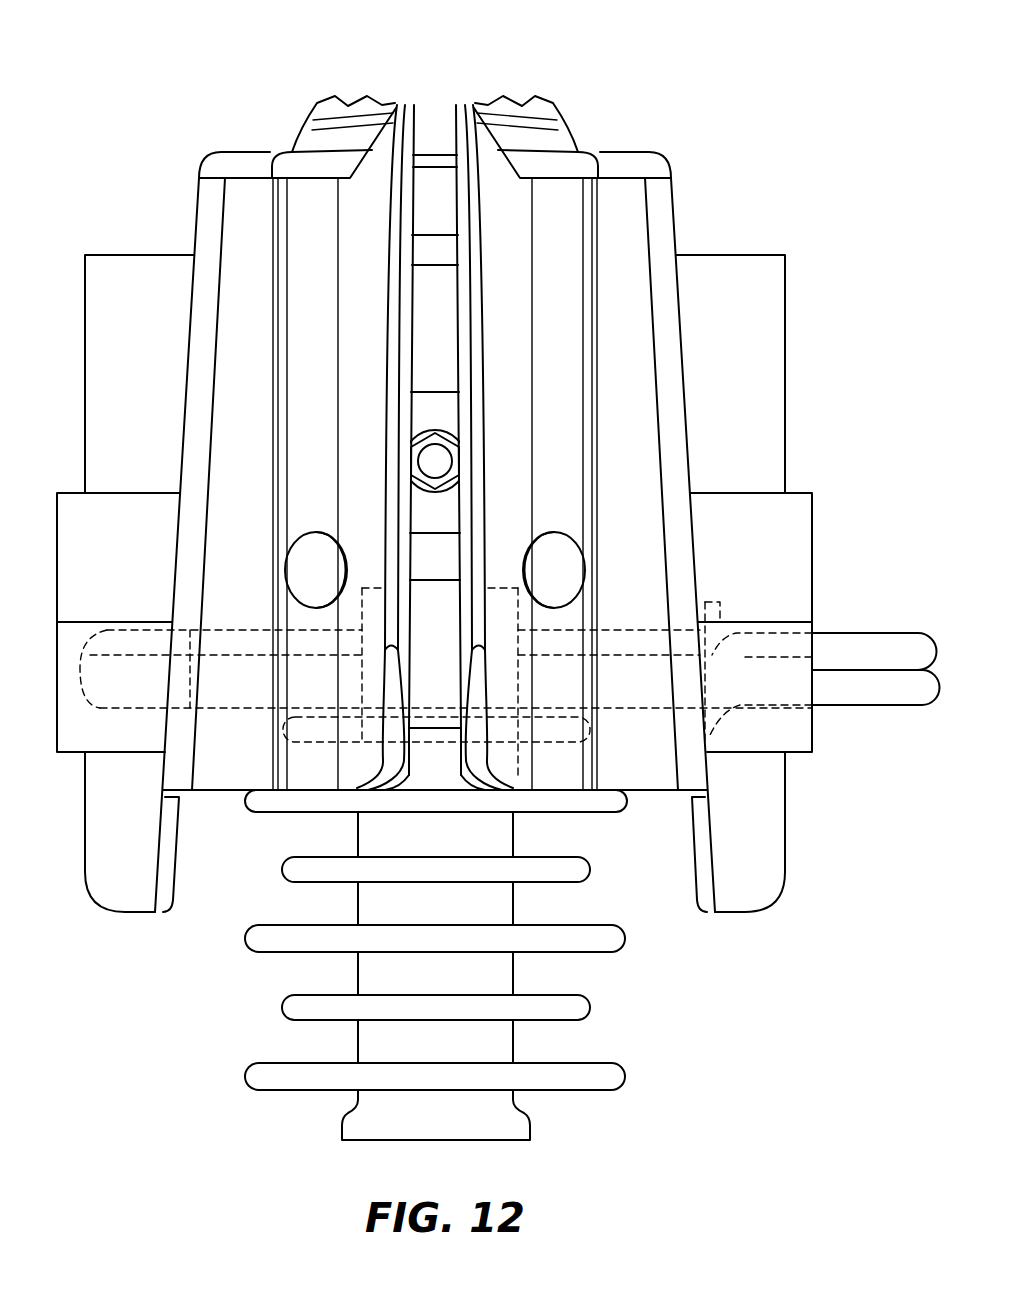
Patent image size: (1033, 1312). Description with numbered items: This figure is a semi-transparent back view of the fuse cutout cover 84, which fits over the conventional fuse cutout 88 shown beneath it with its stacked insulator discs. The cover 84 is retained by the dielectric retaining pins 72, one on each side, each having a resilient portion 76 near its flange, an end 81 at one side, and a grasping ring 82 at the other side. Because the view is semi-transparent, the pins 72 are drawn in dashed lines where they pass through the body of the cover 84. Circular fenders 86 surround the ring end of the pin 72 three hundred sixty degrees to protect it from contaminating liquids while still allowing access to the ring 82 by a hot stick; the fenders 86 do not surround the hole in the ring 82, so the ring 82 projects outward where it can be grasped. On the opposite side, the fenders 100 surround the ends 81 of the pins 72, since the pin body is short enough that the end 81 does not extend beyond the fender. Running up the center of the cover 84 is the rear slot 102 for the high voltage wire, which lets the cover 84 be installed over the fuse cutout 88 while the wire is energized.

The dielectric retaining pin 72 is at (218, 680).
The resilient portion 76 is at (667, 690).
The end of the pin 81 is at (115, 685).
The grasping ring 82 is at (838, 633).
The fuse cutout cover 84 is at (680, 84).
The fenders 86 is at (797, 503).
The fuse cutout 88 is at (648, 1105).
The fenders 100 is at (74, 490).
The rear slot 102 is at (438, 117).